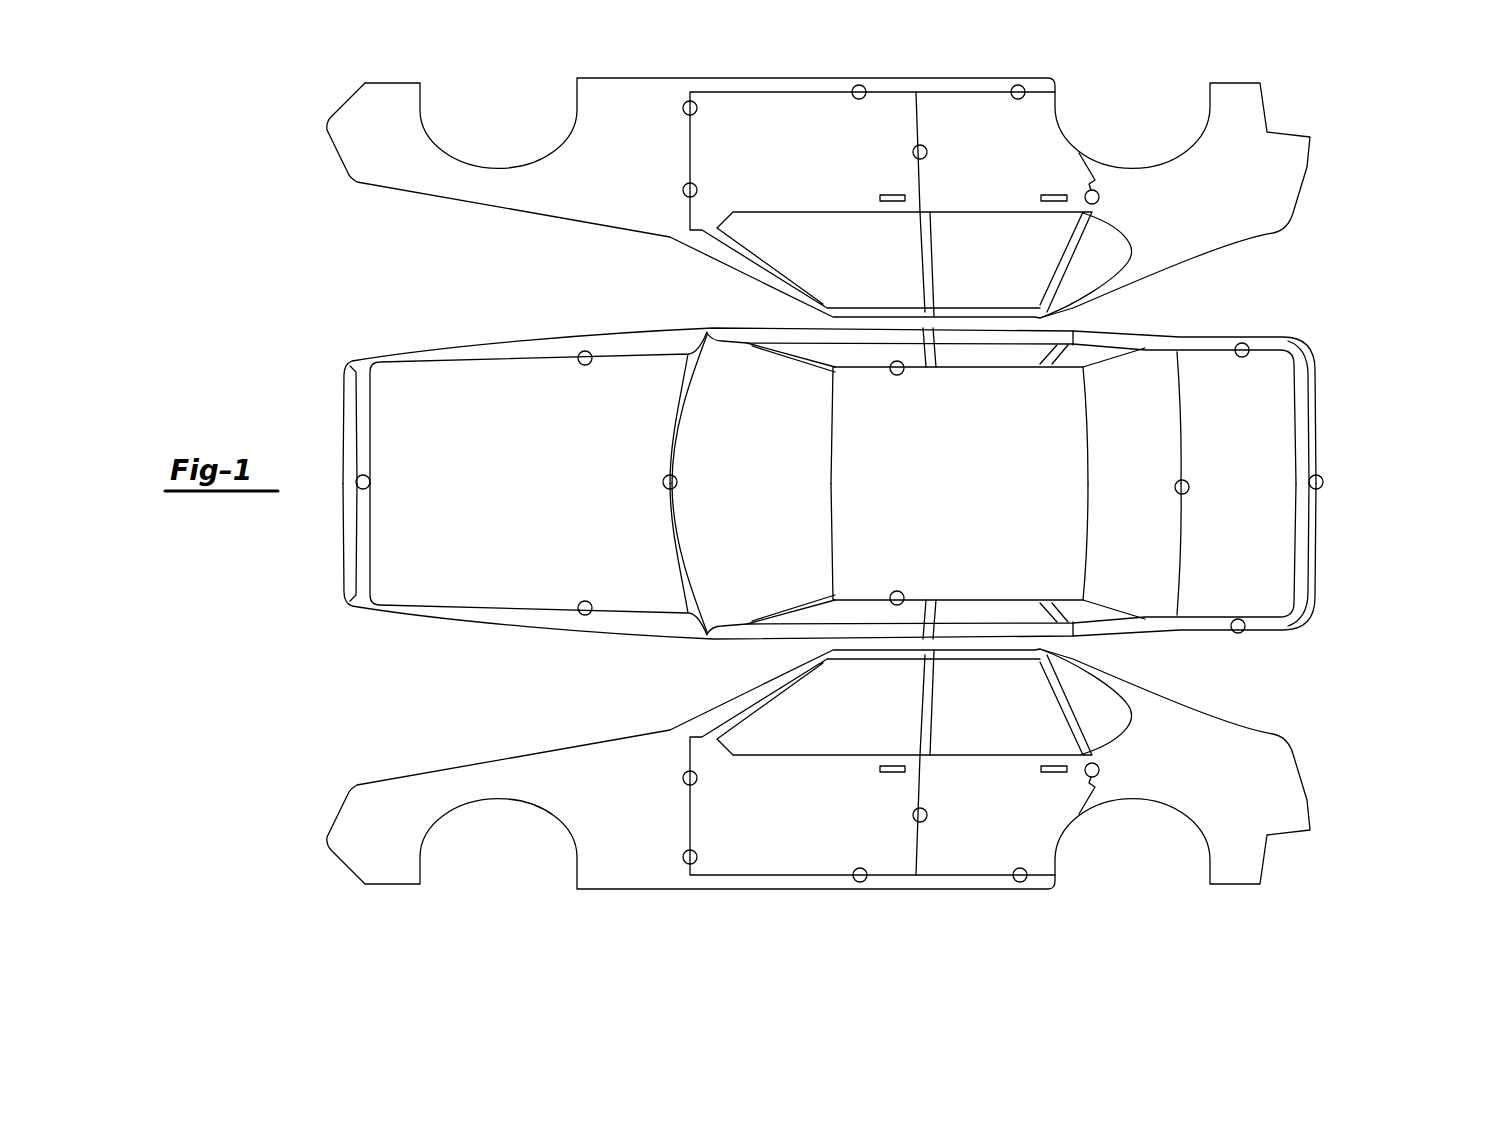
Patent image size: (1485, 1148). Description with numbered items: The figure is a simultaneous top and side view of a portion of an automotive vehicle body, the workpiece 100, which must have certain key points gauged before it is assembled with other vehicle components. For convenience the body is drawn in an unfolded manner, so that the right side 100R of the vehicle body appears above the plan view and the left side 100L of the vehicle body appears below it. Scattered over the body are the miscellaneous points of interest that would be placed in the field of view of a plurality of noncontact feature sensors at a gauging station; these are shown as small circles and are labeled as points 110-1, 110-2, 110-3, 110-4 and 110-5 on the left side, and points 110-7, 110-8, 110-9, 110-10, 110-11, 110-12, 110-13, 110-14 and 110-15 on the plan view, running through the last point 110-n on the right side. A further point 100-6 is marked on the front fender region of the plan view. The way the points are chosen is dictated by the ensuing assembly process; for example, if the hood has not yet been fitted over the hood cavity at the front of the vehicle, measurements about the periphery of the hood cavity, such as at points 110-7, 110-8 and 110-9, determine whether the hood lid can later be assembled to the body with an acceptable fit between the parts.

The workpiece 100 is at (335, 333).
The right side of the vehicle body 100R is at (328, 222).
The left side of the vehicle body 100L is at (347, 772).
The sensor location on hood side 100-6 is at (585, 615).
The point of interest 110-1 is at (746, 780).
The point of interest 110-2 is at (688, 864).
The point of interest 110-3 is at (861, 882).
The point of interest 110-4 is at (927, 818).
The point of interest 110-5 is at (1022, 882).
The point of interest 110-7 is at (441, 484).
The point of interest 110-8 is at (584, 365).
The point of interest 110-9 is at (745, 479).
The point of interest 110-10 is at (899, 375).
The point of interest 110-11 is at (926, 574).
The point of interest 110-12 is at (1232, 453).
The point of interest 110-13 is at (1240, 633).
The point of interest 110-14 is at (1376, 500).
The point of interest 110-15 is at (1242, 343).
The point of interest 110-n is at (1018, 91).